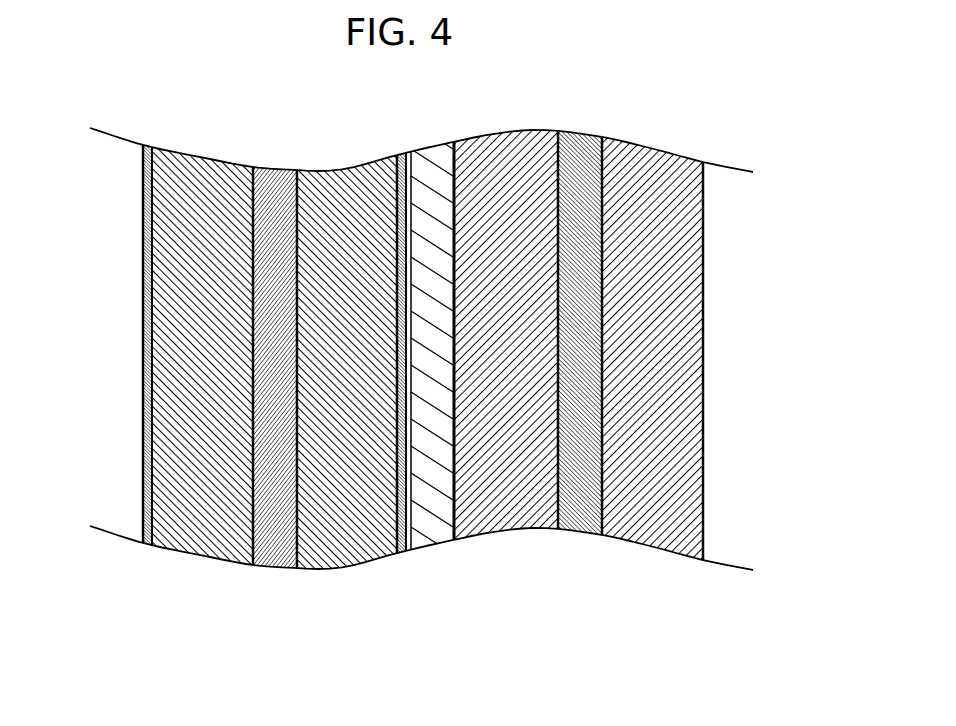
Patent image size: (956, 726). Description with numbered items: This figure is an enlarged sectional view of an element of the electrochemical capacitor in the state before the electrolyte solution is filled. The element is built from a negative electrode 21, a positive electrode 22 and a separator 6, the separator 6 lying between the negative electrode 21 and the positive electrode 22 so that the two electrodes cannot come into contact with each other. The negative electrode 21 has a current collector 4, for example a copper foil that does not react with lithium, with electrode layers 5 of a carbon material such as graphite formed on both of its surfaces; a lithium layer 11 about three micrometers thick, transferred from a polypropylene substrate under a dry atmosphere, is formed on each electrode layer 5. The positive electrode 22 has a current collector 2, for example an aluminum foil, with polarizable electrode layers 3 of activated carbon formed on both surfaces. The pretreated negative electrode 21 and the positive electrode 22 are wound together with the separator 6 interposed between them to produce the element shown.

The current collector 2 is at (587, 533).
The polarizable electrode layer 3 is at (579, 342).
The current collector 4 is at (273, 553).
The electrode layer 5 is at (274, 341).
The separator 6 is at (433, 528).
The lithium layer 11 is at (143, 541).
The negative electrode 21 is at (212, 142).
The positive electrode 22 is at (512, 118).